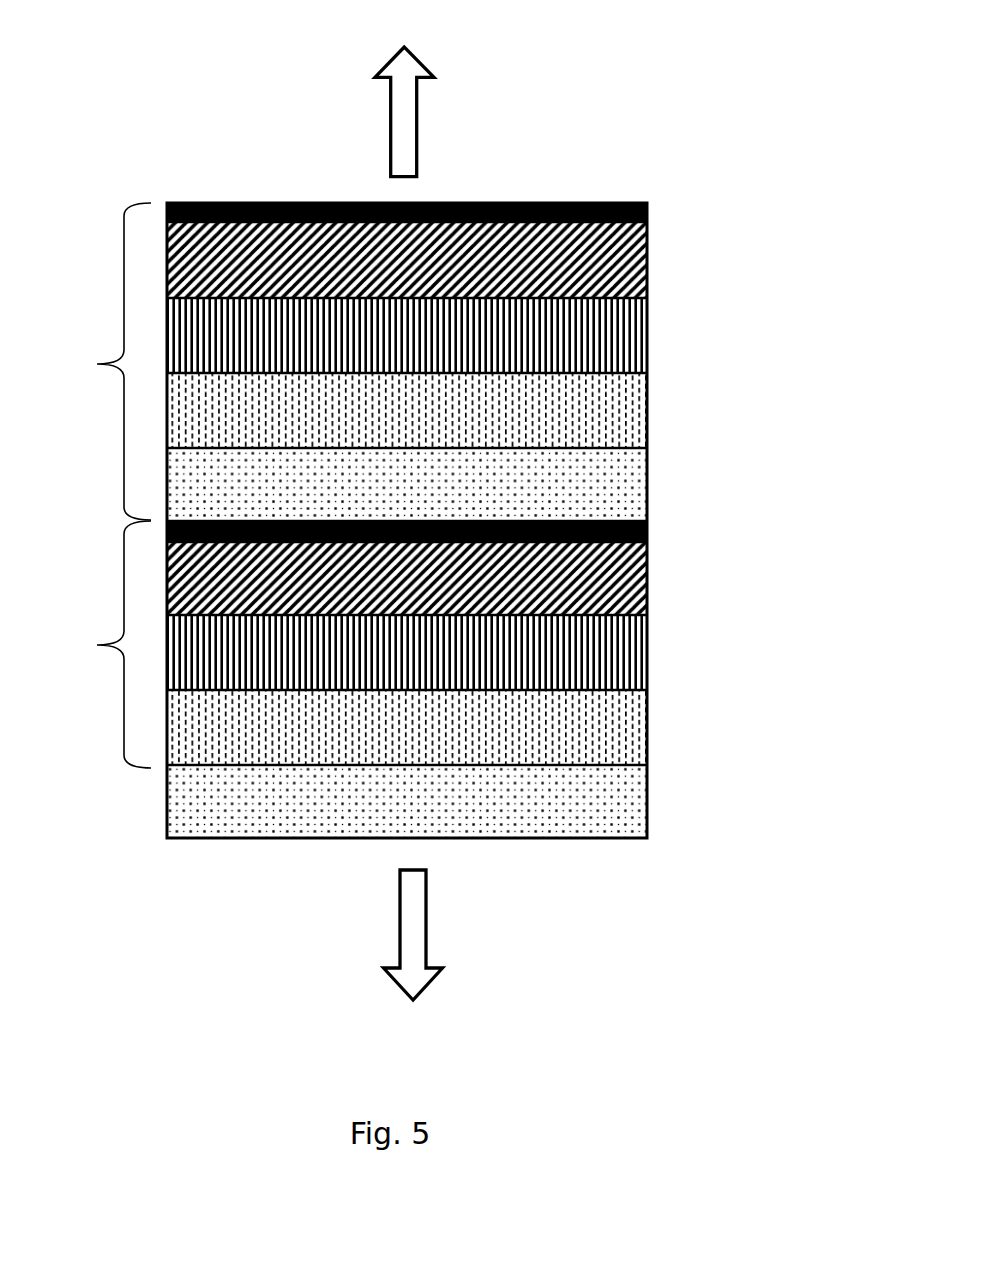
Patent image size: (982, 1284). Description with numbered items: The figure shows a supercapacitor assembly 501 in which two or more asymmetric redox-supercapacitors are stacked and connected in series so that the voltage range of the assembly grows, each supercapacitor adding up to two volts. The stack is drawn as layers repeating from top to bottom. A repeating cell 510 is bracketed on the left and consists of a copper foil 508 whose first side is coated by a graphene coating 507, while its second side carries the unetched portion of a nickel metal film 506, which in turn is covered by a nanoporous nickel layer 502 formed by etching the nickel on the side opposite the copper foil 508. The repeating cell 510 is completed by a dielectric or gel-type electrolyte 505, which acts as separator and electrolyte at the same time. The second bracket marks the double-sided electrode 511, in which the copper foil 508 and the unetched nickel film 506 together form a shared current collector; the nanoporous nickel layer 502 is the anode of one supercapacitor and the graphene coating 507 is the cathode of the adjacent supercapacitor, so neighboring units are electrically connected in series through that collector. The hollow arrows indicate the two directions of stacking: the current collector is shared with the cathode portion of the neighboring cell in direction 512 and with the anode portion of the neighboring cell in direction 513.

The supercapacitor assembly 501 is at (201, 149).
The nanoporous nickel layer 502 is at (648, 414).
The dielectric or gel-type electrolyte 505 is at (648, 491).
The unetched portion of nickel metal film 506 is at (648, 330).
The graphene coating 507 is at (648, 214).
The copper foil 508 is at (648, 272).
The repeating cell 510 is at (99, 361).
The double-sided electrode 511 is at (98, 644).
The direction toward adjacent supercapacitor cell (cathode side) 512 is at (404, 92).
The direction toward adjacent supercapacitor cell (anode side) 513 is at (413, 955).